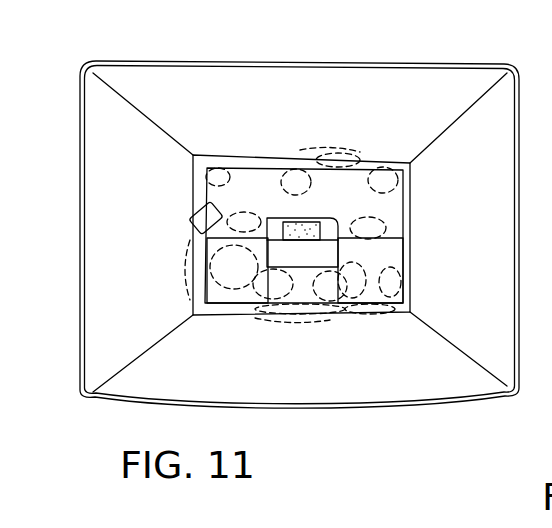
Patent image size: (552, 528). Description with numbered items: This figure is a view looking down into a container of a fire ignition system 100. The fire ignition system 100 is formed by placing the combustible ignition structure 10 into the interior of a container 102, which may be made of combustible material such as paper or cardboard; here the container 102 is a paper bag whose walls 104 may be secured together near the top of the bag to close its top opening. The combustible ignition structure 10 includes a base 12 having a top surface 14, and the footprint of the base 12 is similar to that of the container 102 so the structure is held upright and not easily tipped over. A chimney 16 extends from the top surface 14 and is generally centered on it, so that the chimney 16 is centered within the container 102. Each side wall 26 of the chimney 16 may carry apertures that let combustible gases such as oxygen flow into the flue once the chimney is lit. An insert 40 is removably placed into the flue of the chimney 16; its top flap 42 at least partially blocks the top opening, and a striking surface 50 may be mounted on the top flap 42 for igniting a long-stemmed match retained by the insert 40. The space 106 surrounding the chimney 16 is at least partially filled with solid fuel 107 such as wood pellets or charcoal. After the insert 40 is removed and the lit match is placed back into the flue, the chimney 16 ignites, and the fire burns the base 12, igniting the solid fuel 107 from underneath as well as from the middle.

The fire ignition system 100 is at (60, 136).
The container 102 is at (474, 37).
The walls 104 is at (315, 84).
The combustible ignition structure 10 is at (254, 293).
The base 12 is at (338, 300).
The top surface 14 is at (293, 234).
The chimney 16 is at (276, 199).
The side wall 26 is at (298, 267).
The insert 40 is at (349, 220).
The top flap 42 is at (325, 255).
The striking surface 50 is at (310, 222).
The space 106 is at (214, 272).
The solid fuel 107 is at (190, 212).